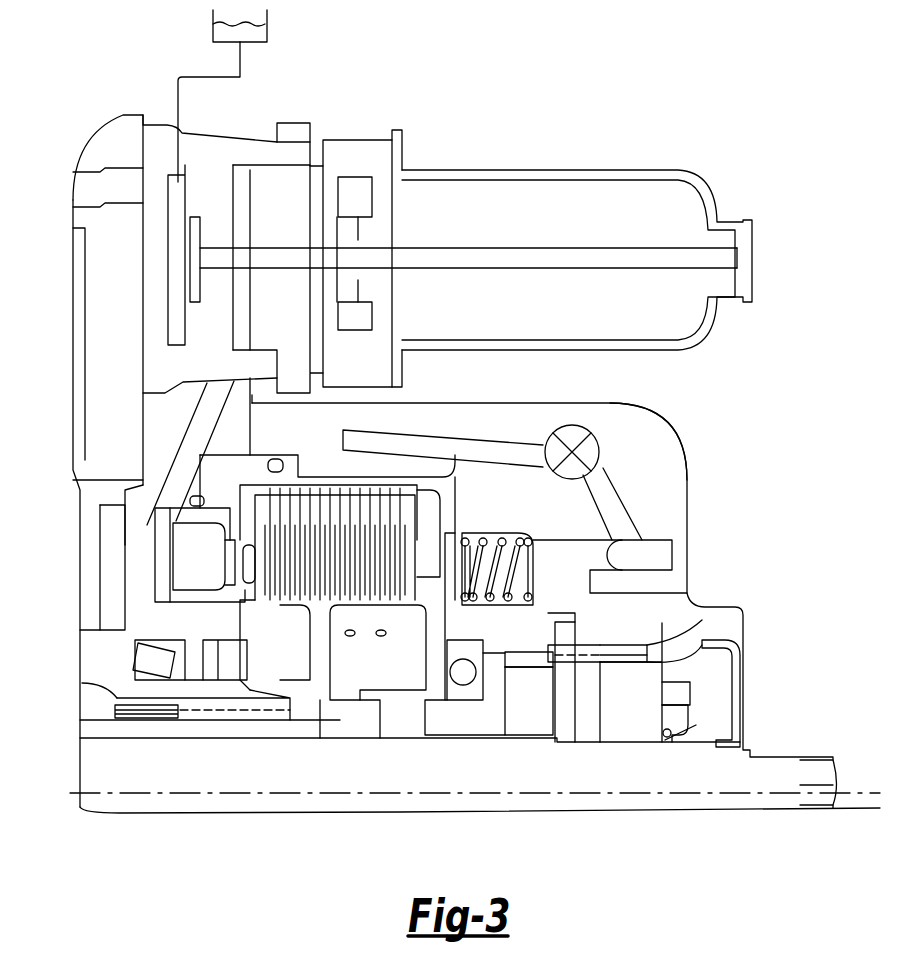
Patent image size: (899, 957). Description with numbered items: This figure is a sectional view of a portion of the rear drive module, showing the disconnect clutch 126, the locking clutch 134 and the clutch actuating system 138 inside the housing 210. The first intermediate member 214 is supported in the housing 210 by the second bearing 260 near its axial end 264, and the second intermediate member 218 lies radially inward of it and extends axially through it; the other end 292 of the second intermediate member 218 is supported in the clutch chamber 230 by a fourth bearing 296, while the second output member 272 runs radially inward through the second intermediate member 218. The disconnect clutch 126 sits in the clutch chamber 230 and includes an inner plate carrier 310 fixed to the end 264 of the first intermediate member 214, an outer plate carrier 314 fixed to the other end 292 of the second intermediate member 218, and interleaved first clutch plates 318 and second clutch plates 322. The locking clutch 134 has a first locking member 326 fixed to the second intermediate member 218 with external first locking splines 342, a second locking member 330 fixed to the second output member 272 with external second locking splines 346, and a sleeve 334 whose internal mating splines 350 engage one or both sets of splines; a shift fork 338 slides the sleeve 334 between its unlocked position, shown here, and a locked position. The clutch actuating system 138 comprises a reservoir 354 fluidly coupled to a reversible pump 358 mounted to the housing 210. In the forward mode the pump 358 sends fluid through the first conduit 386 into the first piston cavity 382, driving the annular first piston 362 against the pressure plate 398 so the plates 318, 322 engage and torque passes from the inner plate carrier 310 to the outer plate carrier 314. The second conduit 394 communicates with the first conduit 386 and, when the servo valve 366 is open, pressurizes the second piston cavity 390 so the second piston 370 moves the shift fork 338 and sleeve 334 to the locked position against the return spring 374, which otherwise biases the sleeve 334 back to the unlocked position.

The clutch actuating system 138 is at (400, 59).
The reservoir 354 is at (270, 32).
The housing 210 is at (123, 135).
The pump 358 is at (575, 200).
The first conduit 386 is at (203, 423).
The first piston cavity 382 is at (163, 542).
The pressure plate 398 is at (260, 535).
The first piston 362 is at (165, 598).
The second bearing 260 is at (160, 655).
The first intermediate member 214 is at (140, 697).
The second intermediate member 218 is at (120, 733).
The axial end of the first intermediate member 264 is at (270, 695).
The second clutch plates 322 is at (332, 520).
The disconnect clutch 126 is at (365, 472).
The clutch chamber 230 is at (448, 432).
The second conduit 394 is at (545, 450).
The valve 366 is at (620, 455).
The return spring 374 is at (480, 543).
The second piston 370 is at (632, 558).
The second piston cavity 390 is at (662, 560).
The shift fork 338 is at (654, 636).
The locking clutch 134 is at (690, 612).
The sleeve 334 is at (722, 640).
The first locking splines 342 is at (524, 652).
The first clutch plates 318 is at (350, 572).
The second locking splines 346 is at (598, 657).
The mating splines 350 is at (712, 683).
The second locking member 330 is at (588, 692).
The inner plate carrier 310 is at (320, 664).
The outer plate carrier 314 is at (415, 680).
The fourth bearing 296 is at (465, 678).
The other end of the second intermediate member 292 is at (485, 718).
The first locking member 326 is at (533, 702).
The second output member 272 is at (775, 790).